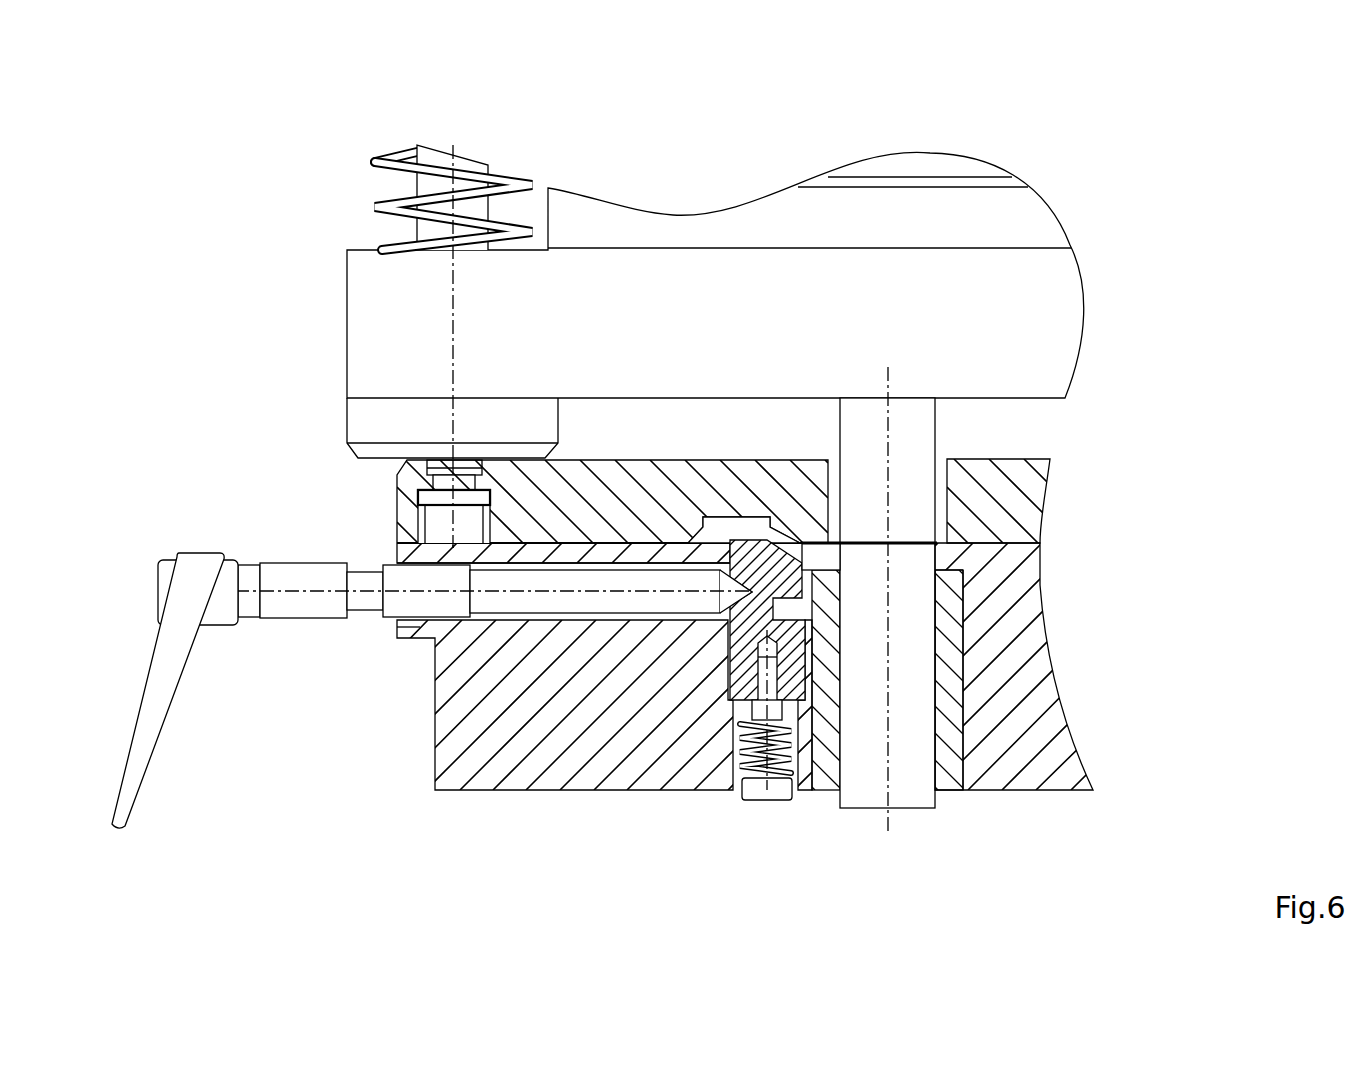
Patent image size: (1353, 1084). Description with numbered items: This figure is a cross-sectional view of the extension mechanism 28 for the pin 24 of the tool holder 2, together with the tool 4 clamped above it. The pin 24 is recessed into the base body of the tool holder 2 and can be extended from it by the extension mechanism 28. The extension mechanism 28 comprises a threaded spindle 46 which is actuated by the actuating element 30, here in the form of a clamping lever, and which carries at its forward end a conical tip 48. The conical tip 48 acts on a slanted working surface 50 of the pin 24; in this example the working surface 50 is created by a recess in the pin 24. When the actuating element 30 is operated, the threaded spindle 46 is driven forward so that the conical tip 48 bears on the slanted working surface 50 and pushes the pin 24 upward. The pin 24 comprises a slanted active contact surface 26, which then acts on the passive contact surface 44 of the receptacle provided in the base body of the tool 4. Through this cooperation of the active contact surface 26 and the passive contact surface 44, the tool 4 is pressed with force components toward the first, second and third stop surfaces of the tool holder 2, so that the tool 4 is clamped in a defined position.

The extension mechanism 28 is at (712, 186).
The tool 4 is at (527, 490).
The passive contact surface 44 is at (777, 527).
The slanted active contact surface 26 is at (797, 540).
The tool holder 2 is at (997, 622).
The actuating element 30 is at (167, 643).
The threaded spindle 46 is at (410, 600).
The conical tip 48 is at (697, 623).
The slanted working surface 50 is at (763, 613).
The pin 24 is at (807, 570).